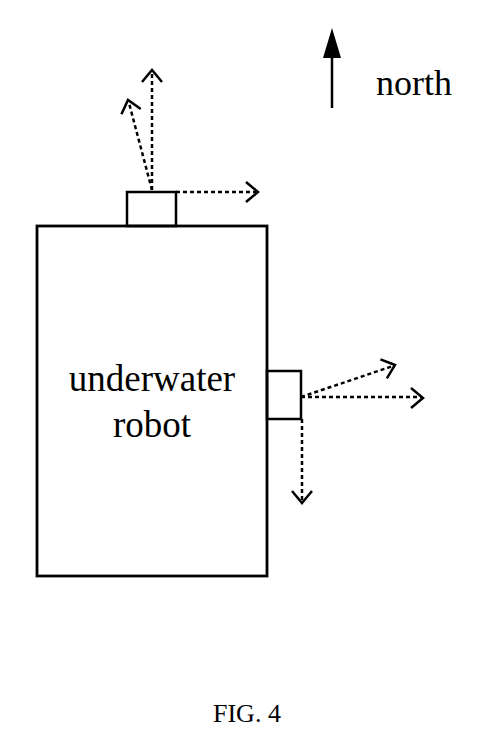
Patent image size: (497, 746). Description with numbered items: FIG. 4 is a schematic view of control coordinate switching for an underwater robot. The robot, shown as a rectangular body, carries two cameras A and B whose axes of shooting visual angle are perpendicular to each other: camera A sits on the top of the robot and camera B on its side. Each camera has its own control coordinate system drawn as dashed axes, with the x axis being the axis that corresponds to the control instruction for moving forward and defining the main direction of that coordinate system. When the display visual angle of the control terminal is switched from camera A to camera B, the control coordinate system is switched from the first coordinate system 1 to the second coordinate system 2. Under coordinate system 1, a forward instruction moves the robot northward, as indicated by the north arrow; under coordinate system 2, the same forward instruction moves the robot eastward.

The control coordinate system 1 is at (190, 121).
The control coordinate system 2 is at (370, 417).
The camera A is at (151, 209).
The camera B is at (284, 395).